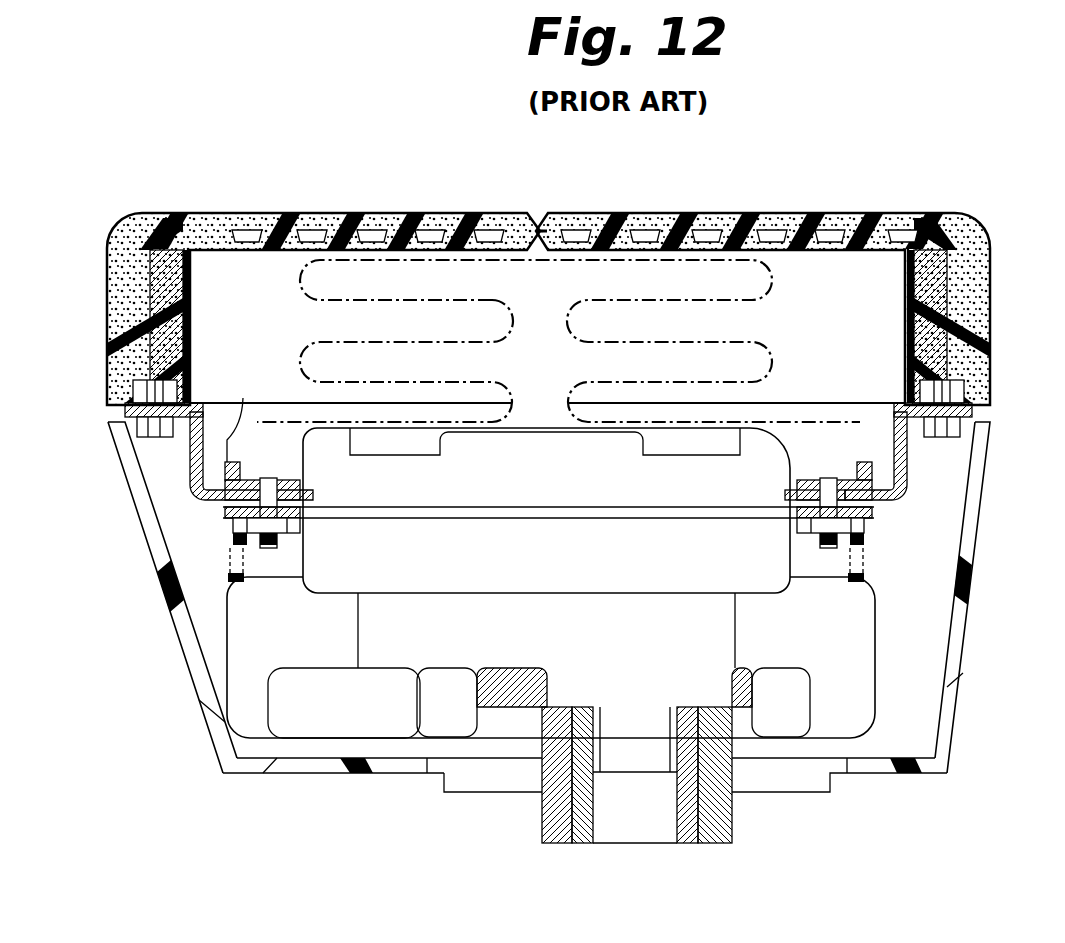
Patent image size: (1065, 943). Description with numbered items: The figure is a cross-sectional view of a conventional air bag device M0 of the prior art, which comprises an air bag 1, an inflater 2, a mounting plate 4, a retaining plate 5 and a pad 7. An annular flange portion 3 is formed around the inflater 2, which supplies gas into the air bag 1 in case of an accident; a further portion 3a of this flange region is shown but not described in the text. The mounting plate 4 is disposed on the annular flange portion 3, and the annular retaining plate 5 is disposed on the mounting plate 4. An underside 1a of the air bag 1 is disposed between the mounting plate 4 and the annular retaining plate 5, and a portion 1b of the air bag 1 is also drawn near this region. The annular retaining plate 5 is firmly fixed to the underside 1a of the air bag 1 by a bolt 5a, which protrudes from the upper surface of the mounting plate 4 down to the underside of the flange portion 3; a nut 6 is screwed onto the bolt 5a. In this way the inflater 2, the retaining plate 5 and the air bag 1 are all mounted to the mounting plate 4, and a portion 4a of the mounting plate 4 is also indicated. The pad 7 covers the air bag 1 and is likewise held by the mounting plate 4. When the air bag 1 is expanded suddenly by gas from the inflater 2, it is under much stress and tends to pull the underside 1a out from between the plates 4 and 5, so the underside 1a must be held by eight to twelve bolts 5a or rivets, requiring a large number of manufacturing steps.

The air bag 1 is at (462, 256).
The underside of the air bag 1a is at (303, 500).
The heater lead portion 1b is at (243, 398).
The inflater 2 is at (556, 585).
The annular flange portion 3 is at (656, 512).
The support plate fastening nut 3a is at (268, 550).
The mounting plate 4 is at (908, 462).
The reflector plate flange 4a is at (812, 488).
The annular retaining plate 5 is at (860, 431).
The bolt 5a is at (270, 482).
The nut 6 is at (287, 556).
The pad 7 is at (860, 213).
The conventional air bag device M0 is at (945, 516).